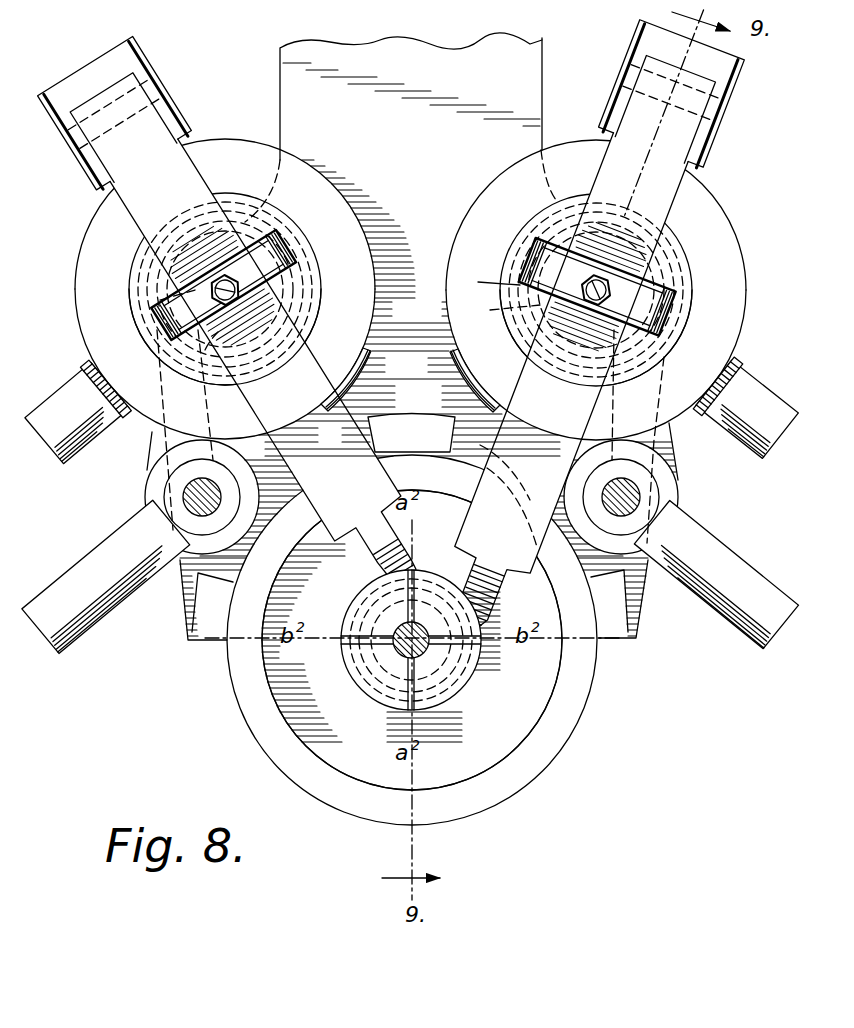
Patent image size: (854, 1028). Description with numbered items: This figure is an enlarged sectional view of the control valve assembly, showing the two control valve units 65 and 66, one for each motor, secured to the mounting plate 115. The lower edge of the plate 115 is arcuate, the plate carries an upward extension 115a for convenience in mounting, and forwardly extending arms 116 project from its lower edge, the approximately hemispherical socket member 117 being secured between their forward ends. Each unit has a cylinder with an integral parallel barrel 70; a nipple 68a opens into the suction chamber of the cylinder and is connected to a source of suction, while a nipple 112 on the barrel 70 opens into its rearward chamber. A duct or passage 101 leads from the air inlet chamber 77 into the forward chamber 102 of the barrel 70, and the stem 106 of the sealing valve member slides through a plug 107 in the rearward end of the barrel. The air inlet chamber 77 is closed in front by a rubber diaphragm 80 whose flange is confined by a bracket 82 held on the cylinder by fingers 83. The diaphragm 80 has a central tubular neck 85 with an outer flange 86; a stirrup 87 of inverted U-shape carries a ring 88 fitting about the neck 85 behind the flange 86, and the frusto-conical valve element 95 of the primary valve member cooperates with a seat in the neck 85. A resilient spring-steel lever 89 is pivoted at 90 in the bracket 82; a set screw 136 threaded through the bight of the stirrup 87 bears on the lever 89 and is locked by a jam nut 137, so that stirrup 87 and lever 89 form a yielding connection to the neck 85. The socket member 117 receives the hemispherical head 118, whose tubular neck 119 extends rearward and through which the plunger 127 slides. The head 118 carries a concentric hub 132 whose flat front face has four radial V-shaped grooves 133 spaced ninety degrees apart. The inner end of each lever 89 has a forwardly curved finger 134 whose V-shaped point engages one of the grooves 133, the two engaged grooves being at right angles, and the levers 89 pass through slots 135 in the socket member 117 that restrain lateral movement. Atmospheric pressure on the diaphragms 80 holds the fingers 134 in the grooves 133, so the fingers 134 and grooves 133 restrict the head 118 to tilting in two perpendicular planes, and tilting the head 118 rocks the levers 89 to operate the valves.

The control valve unit 65 is at (58, 310).
The control valve unit 66 is at (794, 302).
The nipple 68a is at (70, 395).
The barrel 70 is at (150, 474).
The air inlet chamber 77 is at (501, 304).
The diaphragm 80 is at (310, 292).
The bracket 82 is at (183, 124).
The fingers 83 is at (432, 362).
The neck 85 is at (170, 278).
The flange 86 is at (205, 352).
The stirrup 87 is at (160, 330).
The ring 88 is at (308, 306).
The lever 89 is at (355, 360).
The pivot 90 is at (72, 140).
The valve element 95 is at (270, 366).
The duct or passage 101 is at (210, 400).
The forward chamber 102 is at (224, 499).
The stem 106 is at (185, 492).
The plug 107 is at (548, 510).
The nipple 112 is at (112, 606).
The mounting plate 115 is at (375, 322).
The upward extension 115a is at (527, 62).
The arms 116 is at (212, 642).
The socket member 117 is at (540, 755).
The head 118 is at (368, 760).
The neck 119 is at (360, 670).
The plunger 127 is at (398, 660).
The hub 132 is at (452, 708).
The radial grooves 133 is at (420, 575).
The finger 134 is at (380, 552).
The slots 135 is at (385, 468).
The set screw 136 is at (510, 258).
The jam nut 137 is at (500, 280).